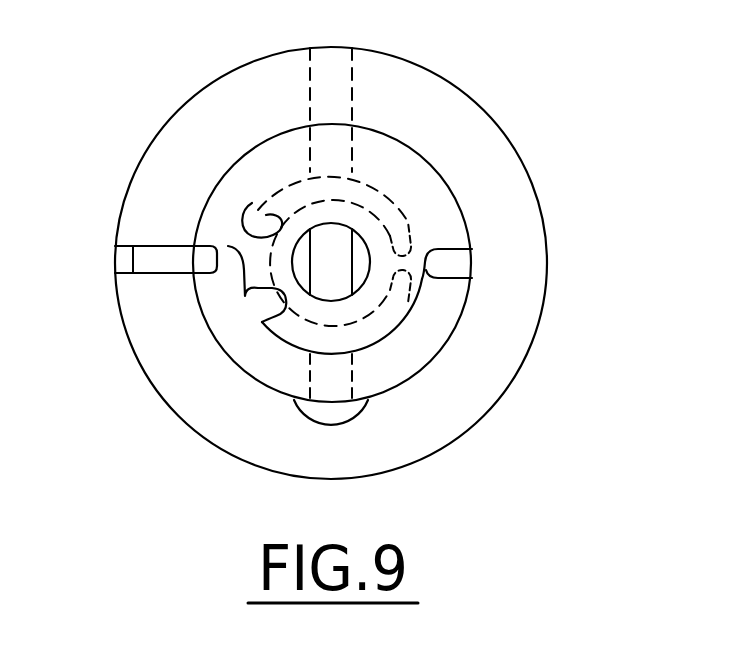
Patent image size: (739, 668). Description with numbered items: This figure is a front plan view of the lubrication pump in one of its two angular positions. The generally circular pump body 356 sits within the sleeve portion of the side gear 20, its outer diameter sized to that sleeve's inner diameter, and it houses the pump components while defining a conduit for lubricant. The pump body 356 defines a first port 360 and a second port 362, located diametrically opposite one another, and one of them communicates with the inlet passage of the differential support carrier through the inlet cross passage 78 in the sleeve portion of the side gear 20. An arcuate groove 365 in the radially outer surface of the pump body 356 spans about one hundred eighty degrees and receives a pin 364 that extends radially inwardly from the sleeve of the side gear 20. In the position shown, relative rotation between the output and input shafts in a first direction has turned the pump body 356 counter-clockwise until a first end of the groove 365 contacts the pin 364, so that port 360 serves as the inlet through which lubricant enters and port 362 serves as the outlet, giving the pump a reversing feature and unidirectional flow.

The side gear 20 is at (412, 74).
The inlet cross passage 78 is at (352, 82).
The pump body 356 is at (413, 156).
The first port 360 is at (380, 206).
The second port 362 is at (375, 332).
The pin 364 is at (162, 258).
The arcuate groove 365 is at (440, 279).